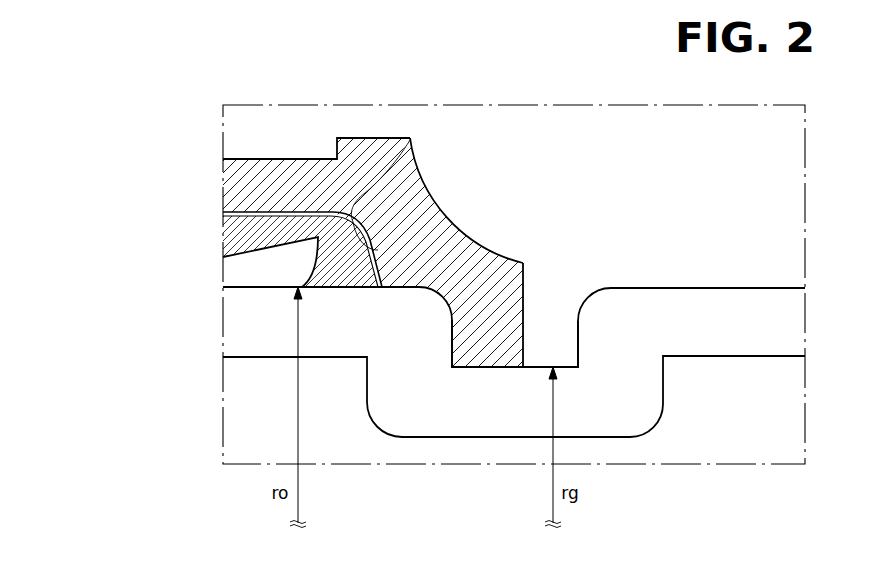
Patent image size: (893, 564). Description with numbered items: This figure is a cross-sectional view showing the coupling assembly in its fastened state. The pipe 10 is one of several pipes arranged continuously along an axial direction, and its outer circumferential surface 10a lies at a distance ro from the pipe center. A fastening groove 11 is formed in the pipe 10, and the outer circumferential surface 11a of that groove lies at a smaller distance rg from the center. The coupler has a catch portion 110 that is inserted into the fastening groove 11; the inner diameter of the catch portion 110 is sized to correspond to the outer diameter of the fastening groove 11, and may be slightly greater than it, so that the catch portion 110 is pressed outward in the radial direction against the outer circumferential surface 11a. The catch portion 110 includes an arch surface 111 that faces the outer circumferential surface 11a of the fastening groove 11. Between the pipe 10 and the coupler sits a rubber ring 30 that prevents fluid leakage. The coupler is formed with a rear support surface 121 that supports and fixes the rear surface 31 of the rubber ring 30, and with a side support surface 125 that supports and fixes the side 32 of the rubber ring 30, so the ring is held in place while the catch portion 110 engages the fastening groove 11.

The pipe 10 is at (242, 329).
The outer circumferential surface of the pipe 10a is at (255, 287).
The fastening groove 11 is at (572, 342).
The outer circumferential surface of the fastening groove 11a is at (542, 363).
The rubber ring 30 is at (316, 152).
The rear surface of the rubber ring 31 is at (282, 223).
The side of the rubber ring 32 is at (350, 255).
The catch portion 110 is at (437, 288).
The arch surface 111 is at (488, 369).
The rear support surface 121 is at (238, 217).
The side support surface 125 is at (412, 148).